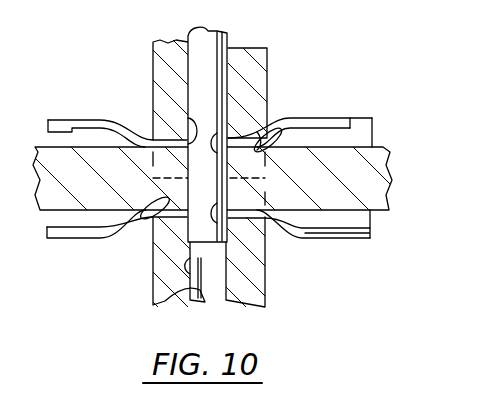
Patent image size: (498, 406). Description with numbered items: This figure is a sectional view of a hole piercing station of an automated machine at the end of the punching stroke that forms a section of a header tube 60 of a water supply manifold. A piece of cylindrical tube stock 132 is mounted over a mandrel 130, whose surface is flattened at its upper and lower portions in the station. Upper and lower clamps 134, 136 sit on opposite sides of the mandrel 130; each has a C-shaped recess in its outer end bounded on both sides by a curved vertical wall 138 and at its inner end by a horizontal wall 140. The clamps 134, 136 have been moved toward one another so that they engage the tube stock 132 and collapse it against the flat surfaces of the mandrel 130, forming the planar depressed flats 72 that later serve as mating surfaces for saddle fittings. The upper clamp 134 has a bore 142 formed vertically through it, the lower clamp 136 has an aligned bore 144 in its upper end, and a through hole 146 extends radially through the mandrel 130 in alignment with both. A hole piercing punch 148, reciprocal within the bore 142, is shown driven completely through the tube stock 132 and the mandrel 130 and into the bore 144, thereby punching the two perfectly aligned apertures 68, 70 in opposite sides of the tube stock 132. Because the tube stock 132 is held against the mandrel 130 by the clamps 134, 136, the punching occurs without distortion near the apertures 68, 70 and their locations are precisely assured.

The header tube 60 is at (366, 119).
The aperture 68 is at (187, 101).
The aperture 70 is at (230, 260).
The flat 72 is at (172, 134).
The mandrel 130 is at (383, 147).
The tube stock 132 is at (75, 242).
The upper clamp 134 is at (204, 87).
The lower clamp 136 is at (267, 302).
The curved vertical wall 138 is at (290, 226).
The horizontal wall 140 is at (268, 148).
The bore 142 is at (196, 53).
The bore 144 is at (152, 303).
The through hole 146 is at (256, 133).
The hole piercing punch 148 is at (228, 32).